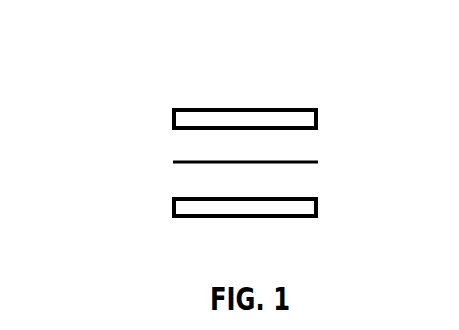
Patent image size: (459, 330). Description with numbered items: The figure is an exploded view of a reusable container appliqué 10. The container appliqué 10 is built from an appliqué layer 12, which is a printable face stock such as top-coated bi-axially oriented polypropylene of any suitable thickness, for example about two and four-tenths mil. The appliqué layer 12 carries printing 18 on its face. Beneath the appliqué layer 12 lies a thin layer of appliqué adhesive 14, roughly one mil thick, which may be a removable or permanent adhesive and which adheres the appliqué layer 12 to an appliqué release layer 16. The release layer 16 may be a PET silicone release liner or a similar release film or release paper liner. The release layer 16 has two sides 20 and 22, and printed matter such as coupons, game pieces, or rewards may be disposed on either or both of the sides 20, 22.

The container appliqué 10 is at (144, 42).
The appliqué layer 12 is at (318, 120).
The appliqué adhesive 14 is at (128, 158).
The appliqué release layer 16 is at (318, 208).
The printing 18 is at (281, 108).
The side of release layer 20 is at (324, 185).
The side of release layer 22 is at (297, 218).